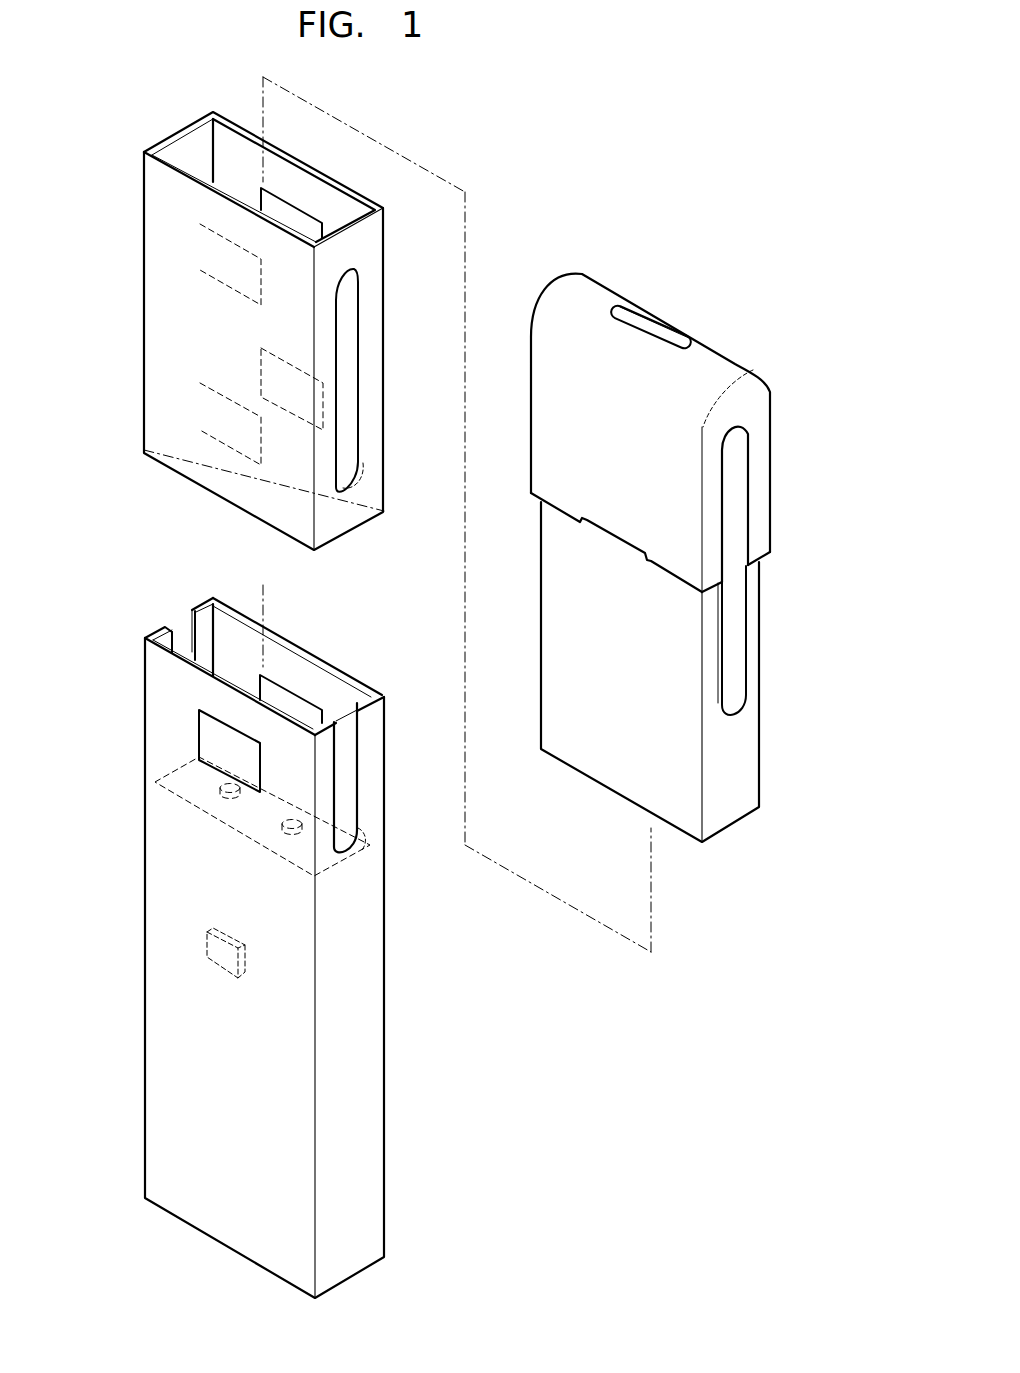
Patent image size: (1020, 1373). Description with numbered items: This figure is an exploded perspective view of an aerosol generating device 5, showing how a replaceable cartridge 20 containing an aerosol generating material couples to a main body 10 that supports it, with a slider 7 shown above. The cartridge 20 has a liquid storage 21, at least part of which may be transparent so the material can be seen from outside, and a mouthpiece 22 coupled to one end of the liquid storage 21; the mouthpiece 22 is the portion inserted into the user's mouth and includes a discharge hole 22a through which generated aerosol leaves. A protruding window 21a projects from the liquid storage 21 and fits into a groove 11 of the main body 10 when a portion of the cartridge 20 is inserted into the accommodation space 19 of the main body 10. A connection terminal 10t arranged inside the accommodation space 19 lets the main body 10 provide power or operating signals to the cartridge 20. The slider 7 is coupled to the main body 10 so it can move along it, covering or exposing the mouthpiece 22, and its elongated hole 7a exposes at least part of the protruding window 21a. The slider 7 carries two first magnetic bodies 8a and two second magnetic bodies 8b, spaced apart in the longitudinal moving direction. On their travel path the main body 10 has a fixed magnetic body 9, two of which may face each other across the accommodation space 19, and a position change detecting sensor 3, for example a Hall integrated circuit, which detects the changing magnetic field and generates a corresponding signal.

The aerosol generating device 5 is at (636, 88).
The slider 7 is at (145, 184).
The elongated hole 7a is at (352, 340).
The first magnetic bodies 8a is at (303, 225).
The second magnetic bodies 8b is at (265, 370).
The main body 10 is at (116, 683).
The connection terminal 10t is at (232, 784).
The groove 11 is at (194, 633).
The fixed magnetic body 9 is at (292, 700).
The accommodation space 19 is at (338, 697).
The position change detecting sensor 3 is at (225, 958).
The cartridge 20 is at (772, 348).
The liquid storage 21 is at (550, 612).
The protruding window 21a is at (735, 625).
The mouthpiece 22 is at (542, 402).
The discharge hole 22a is at (625, 313).